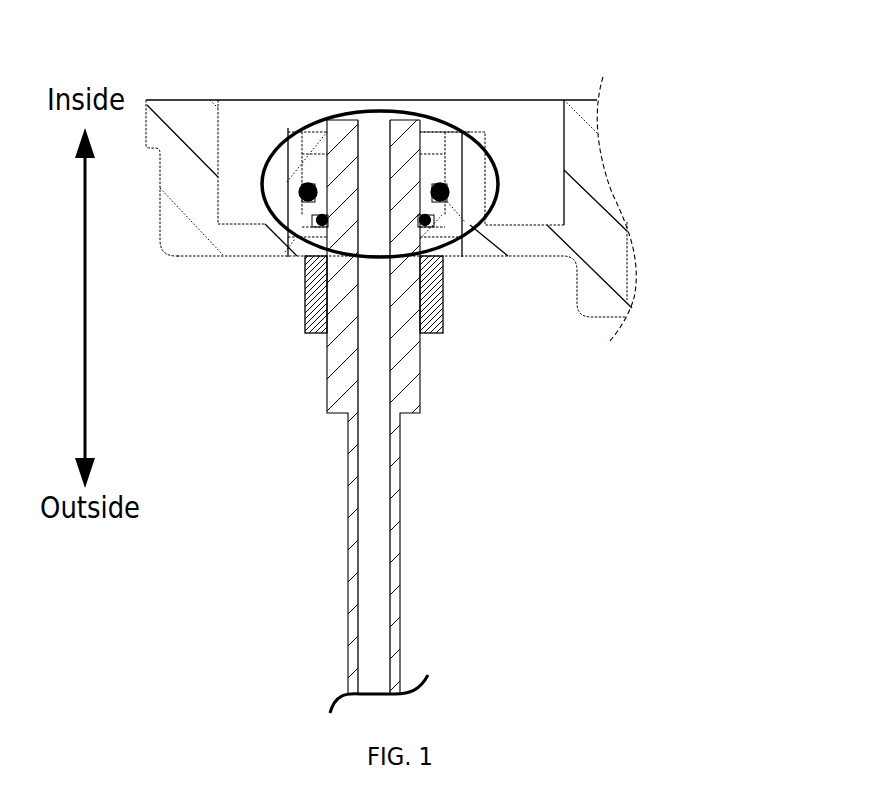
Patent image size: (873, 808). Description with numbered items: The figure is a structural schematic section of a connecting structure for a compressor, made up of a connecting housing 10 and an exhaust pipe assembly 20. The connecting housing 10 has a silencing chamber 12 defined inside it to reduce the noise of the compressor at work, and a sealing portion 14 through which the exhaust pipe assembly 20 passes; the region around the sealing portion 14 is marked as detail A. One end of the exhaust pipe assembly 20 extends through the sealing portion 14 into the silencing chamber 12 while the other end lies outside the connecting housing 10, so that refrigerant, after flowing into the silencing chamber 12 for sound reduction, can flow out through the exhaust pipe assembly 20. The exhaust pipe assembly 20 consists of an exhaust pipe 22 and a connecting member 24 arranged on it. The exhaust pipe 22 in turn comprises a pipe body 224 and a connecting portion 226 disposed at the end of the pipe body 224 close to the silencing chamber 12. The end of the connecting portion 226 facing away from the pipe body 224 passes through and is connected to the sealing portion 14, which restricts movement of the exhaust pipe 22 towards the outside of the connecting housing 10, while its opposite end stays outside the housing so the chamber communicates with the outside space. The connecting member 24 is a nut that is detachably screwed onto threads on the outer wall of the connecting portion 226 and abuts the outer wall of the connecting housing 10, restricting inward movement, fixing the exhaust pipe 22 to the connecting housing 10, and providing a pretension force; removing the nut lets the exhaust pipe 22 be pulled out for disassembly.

The connecting housing 10 is at (595, 224).
The silencing chamber 12 is at (240, 137).
The sealing portion 14 is at (448, 180).
The detail region A is at (378, 112).
The exhaust pipe assembly 20 is at (536, 408).
The exhaust pipe 22 is at (507, 408).
The connecting member 24 is at (430, 312).
The pipe body 224 is at (392, 538).
The connecting portion 226 is at (401, 366).